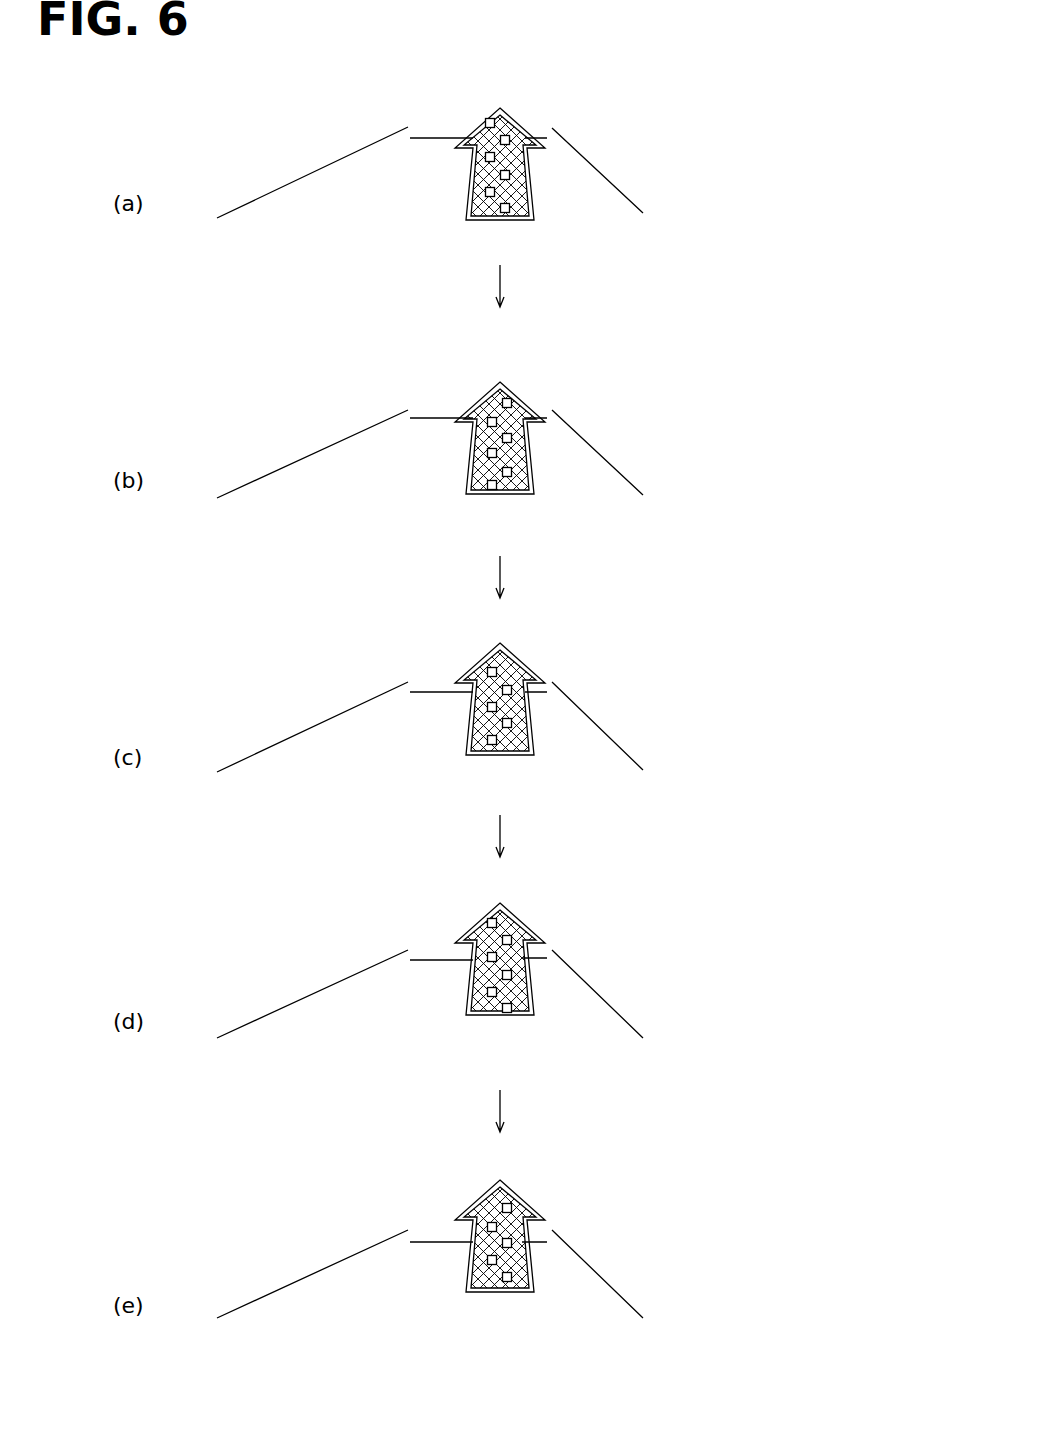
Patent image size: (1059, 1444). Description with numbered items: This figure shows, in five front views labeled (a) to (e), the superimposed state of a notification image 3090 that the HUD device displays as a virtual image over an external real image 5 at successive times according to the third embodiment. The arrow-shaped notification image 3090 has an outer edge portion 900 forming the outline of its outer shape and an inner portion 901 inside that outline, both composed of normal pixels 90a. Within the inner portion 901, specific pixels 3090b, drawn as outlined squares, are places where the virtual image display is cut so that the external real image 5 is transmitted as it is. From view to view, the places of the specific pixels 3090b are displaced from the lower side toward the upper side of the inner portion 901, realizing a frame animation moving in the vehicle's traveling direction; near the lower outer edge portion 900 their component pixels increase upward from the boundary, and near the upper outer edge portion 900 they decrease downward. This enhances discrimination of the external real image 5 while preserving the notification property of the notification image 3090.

The notification image 3090 is at (587, 669).
The specific pixels 3090b is at (511, 687).
The outer edge portion 900 is at (544, 663).
The inner portion 901 is at (344, 722).
The external real image 5 is at (541, 650).
The normal pixels 90a is at (631, 680).